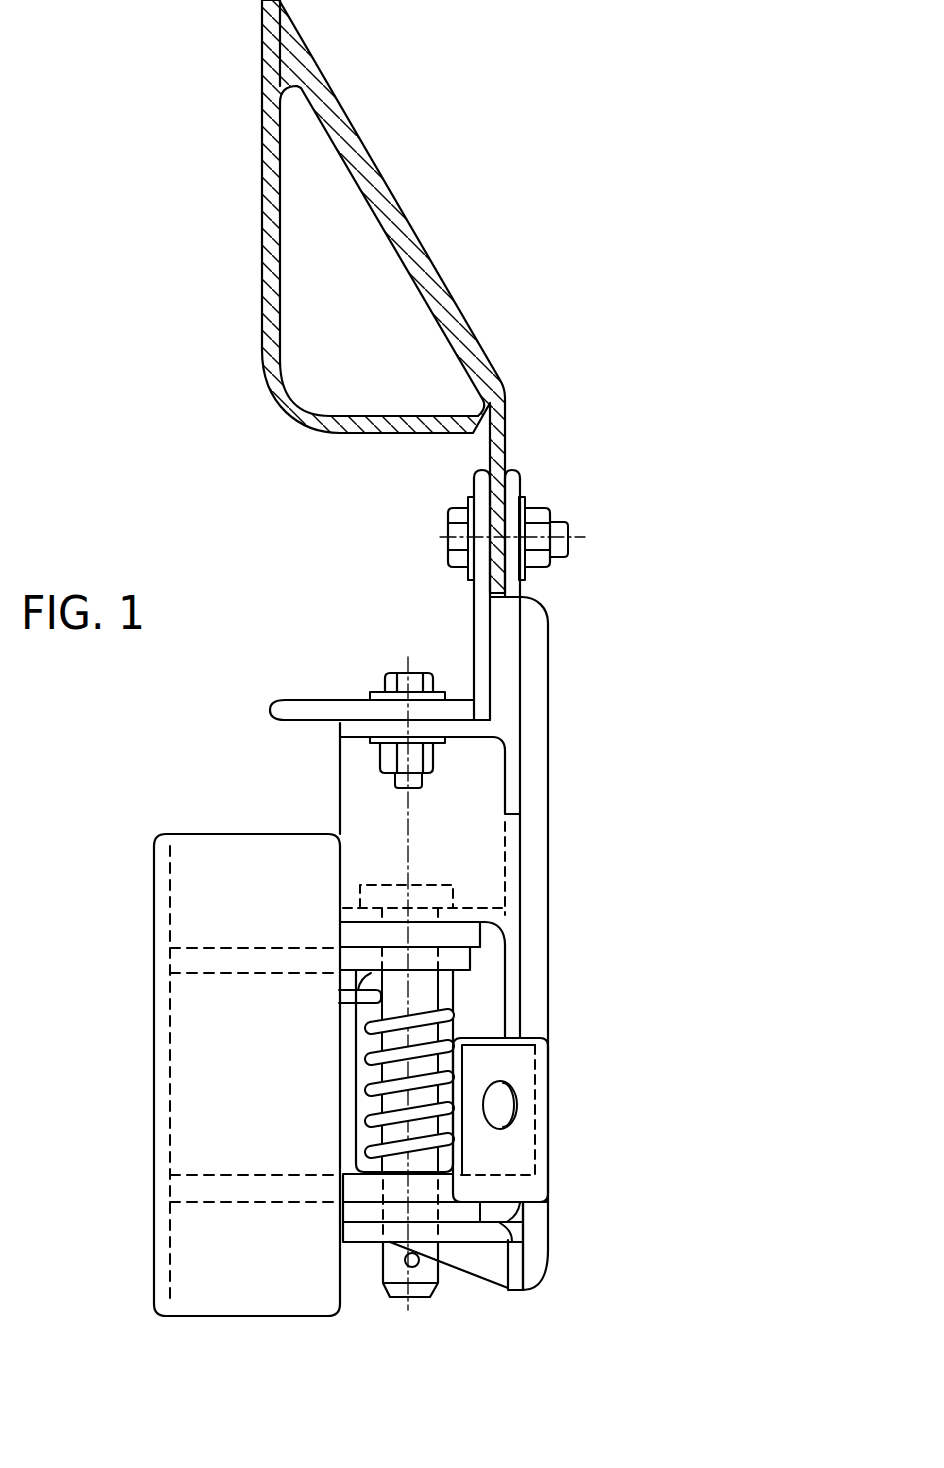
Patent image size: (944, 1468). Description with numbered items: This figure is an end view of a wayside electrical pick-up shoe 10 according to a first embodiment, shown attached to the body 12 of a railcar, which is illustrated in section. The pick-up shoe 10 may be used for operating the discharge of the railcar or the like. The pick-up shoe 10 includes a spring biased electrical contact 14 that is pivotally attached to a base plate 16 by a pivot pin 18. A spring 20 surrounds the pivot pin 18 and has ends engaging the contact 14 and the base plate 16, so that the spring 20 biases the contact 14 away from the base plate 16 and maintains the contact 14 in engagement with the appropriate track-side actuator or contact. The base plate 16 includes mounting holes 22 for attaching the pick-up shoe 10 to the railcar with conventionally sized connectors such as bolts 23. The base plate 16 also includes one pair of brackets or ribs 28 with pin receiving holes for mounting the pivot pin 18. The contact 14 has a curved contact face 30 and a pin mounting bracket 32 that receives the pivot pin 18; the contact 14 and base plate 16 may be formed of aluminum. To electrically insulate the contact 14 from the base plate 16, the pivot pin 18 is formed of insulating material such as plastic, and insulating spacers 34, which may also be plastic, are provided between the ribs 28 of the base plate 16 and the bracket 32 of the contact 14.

The wayside electrical pick-up shoe 10 is at (102, 1053).
The body 12 is at (263, 229).
The spring biased electrical contact 14 is at (212, 834).
The base plate 16 is at (533, 917).
The pivot pin 18 is at (388, 884).
The spring 20 is at (443, 1013).
The mounting holes 22 is at (470, 497).
The bolts 23 is at (447, 531).
The brackets or ribs 28 is at (482, 903).
The curved contact face 30 is at (155, 1101).
The pin mounting bracket 32 is at (463, 955).
The insulating spacers 34 is at (458, 932).